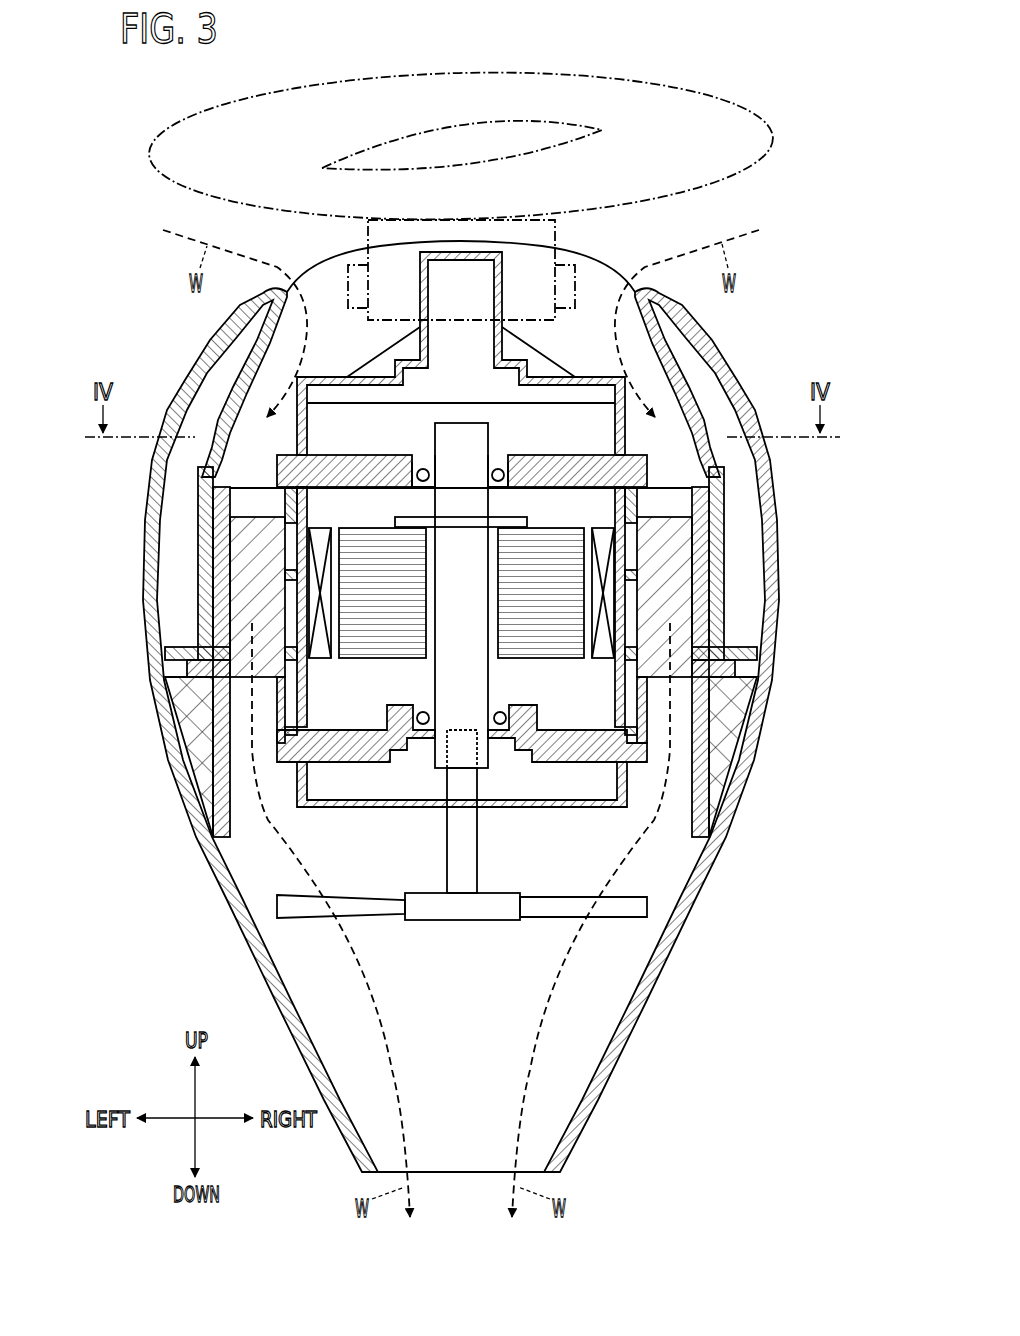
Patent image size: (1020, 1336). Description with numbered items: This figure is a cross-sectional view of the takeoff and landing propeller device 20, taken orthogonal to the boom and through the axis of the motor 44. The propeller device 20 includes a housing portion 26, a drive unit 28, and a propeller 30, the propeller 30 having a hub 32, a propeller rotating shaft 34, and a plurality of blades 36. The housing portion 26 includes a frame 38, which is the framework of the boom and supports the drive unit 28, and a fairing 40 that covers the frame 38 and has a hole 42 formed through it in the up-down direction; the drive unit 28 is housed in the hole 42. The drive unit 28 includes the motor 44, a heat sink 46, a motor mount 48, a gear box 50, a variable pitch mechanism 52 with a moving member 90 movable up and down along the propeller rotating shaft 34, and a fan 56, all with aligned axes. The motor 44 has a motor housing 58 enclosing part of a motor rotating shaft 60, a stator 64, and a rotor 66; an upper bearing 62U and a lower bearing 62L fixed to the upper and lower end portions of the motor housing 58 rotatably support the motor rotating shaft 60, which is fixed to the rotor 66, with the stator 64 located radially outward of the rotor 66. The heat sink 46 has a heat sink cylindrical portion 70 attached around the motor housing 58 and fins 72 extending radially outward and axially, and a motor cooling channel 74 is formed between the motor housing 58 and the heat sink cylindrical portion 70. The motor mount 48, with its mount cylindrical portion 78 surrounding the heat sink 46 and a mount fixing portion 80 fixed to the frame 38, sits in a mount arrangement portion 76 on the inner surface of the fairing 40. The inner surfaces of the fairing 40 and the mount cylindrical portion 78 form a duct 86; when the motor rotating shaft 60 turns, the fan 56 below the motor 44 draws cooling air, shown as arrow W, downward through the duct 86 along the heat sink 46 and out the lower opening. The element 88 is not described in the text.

The propeller device 20 is at (812, 51).
The housing portion 26 is at (180, 312).
The drive unit 28 is at (521, 822).
The propeller 30 is at (646, 62).
The hub 32 is at (484, 70).
The propeller rotating shaft 34 is at (565, 235).
The blades 36 is at (428, 134).
The frame 38 is at (737, 715).
The fairing 40 is at (682, 293).
The hole 42 is at (472, 1153).
The motor 44 is at (280, 777).
The heat sink 46 is at (670, 497).
The motor mount 48 is at (712, 511).
The gear box 50 is at (540, 350).
The variable pitch mechanism 52 is at (461, 286).
The fan 56 is at (476, 922).
The motor housing 58 is at (300, 500).
The motor rotating shaft 60 is at (424, 508).
The bearing 62U is at (421, 460).
The bearing 62L is at (422, 727).
The stator 64 is at (321, 660).
The rotor 66 is at (394, 659).
The heat sink cylindrical portion 70 is at (647, 733).
The fins 72 is at (710, 690).
The motor cooling channel 74 is at (293, 556).
The mount arrangement portion 76 is at (197, 540).
The mount cylindrical portion 78 is at (712, 618).
The mount fixing portion 80 is at (735, 648).
The duct 86 is at (672, 852).
The support strut 88 is at (410, 347).
The moving member 90 is at (585, 276).